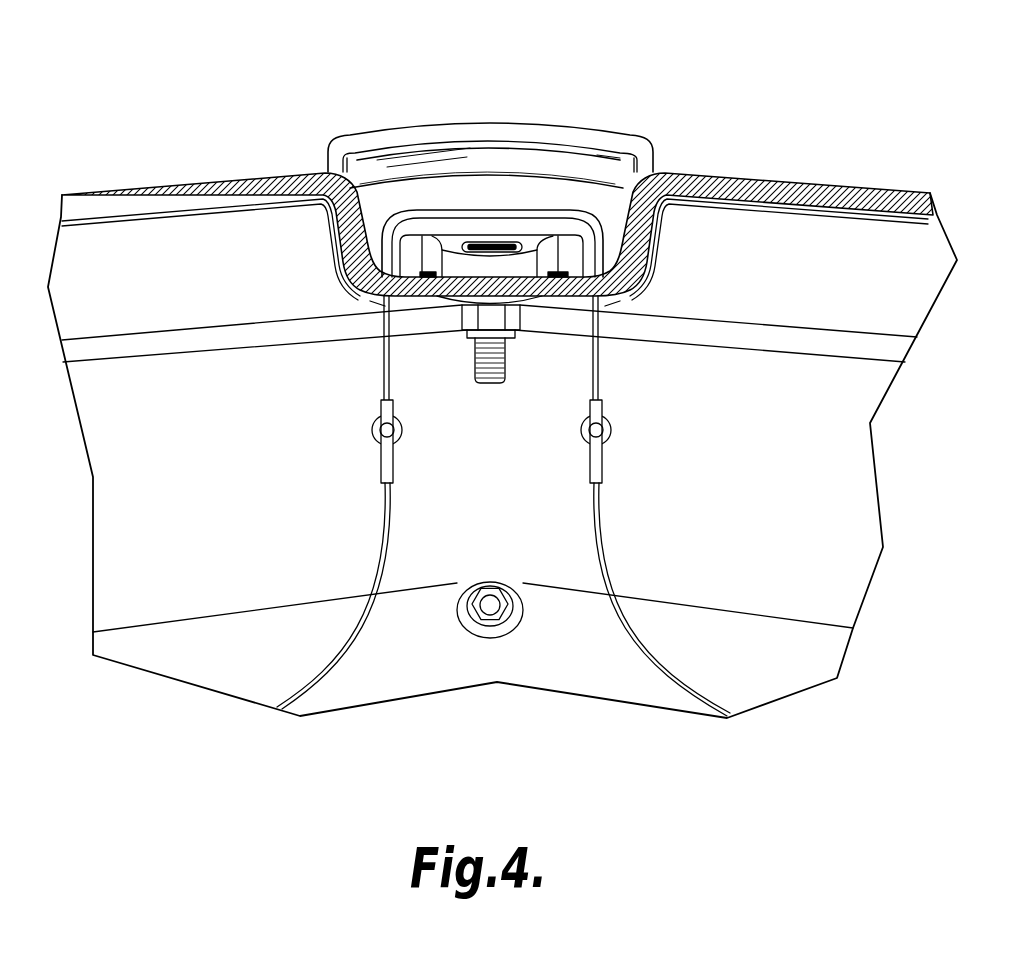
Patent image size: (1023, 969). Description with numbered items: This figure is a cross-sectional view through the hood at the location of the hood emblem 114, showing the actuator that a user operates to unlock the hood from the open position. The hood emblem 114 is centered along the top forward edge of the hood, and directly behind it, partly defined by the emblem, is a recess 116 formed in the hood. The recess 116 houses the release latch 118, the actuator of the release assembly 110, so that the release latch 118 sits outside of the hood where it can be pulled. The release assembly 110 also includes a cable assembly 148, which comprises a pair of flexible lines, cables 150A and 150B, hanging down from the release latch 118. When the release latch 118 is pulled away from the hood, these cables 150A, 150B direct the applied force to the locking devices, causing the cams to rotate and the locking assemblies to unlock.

The release assembly 110 is at (283, 148).
The hood emblem 114 is at (387, 137).
The recess 116 is at (483, 170).
The release latch 118 is at (540, 208).
The cable assembly 148 is at (753, 410).
The cable 150A is at (383, 503).
The cable 150B is at (597, 503).